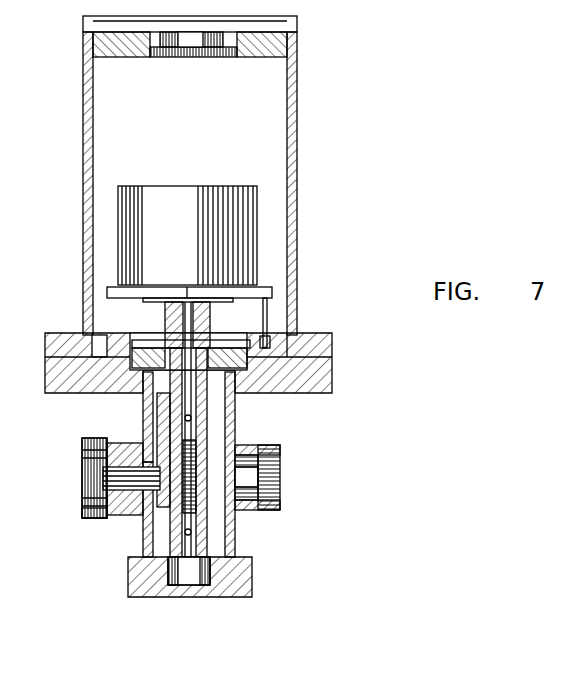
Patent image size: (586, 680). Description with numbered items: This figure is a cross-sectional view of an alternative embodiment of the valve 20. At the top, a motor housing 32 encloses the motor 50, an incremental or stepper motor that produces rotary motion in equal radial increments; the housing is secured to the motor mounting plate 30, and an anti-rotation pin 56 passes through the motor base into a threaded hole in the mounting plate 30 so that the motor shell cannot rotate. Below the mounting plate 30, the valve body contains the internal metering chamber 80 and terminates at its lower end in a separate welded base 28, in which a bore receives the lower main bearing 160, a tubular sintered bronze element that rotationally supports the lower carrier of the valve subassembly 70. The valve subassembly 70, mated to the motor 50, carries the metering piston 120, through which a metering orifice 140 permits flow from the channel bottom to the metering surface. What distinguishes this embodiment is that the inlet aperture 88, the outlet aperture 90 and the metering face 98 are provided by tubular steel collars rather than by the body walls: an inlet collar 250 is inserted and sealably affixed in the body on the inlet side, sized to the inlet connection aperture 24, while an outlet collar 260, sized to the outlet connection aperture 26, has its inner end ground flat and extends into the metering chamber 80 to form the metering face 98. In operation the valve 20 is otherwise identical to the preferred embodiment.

The valve 20 is at (46, 236).
The motor housing 32 is at (298, 125).
The motor 50 is at (200, 186).
The anti-rotation pin 56 is at (265, 302).
The motor mounting plate 30 is at (332, 378).
The internal metering chamber 80 is at (220, 415).
The metering face portion 98 is at (143, 445).
The metering piston 120 is at (140, 552).
The metering orifice 140 is at (148, 514).
The valve subassembly 70 is at (238, 532).
The outlet aperture 90 is at (108, 479).
The outlet connection aperture 26 is at (85, 458).
The outlet collar 260 is at (88, 520).
The inlet collar 250 is at (268, 445).
The inlet aperture 88 is at (270, 480).
The inlet connection aperture 24 is at (283, 458).
The base 28 is at (128, 590).
The lower main bearing 160 is at (205, 578).